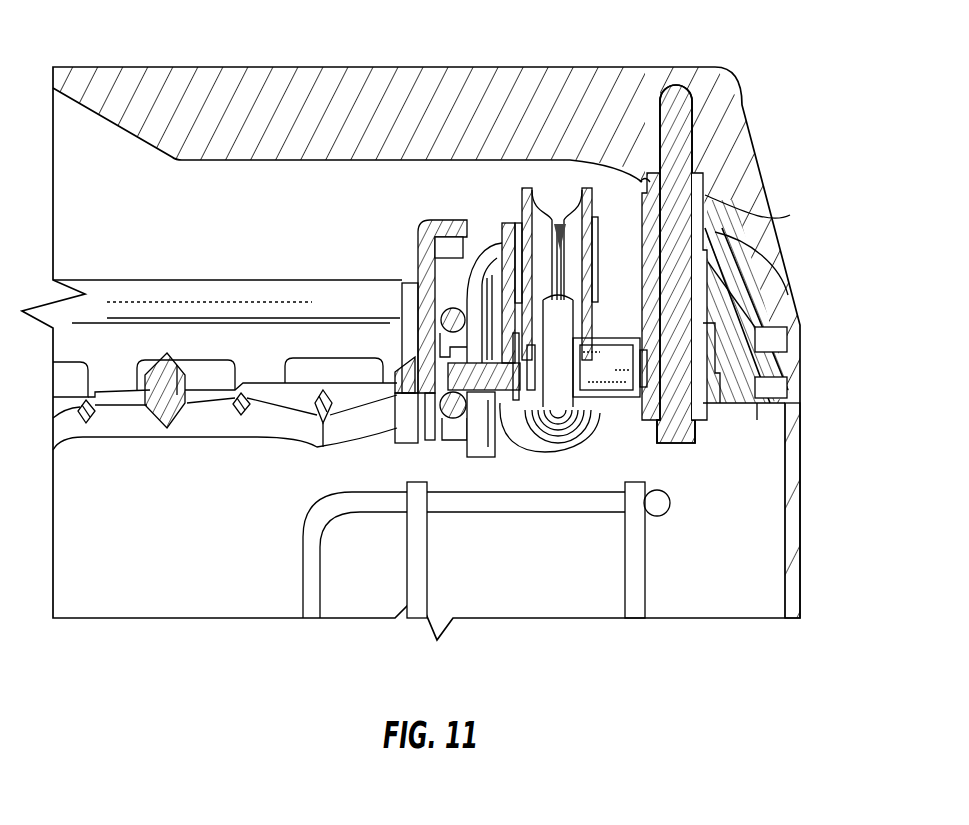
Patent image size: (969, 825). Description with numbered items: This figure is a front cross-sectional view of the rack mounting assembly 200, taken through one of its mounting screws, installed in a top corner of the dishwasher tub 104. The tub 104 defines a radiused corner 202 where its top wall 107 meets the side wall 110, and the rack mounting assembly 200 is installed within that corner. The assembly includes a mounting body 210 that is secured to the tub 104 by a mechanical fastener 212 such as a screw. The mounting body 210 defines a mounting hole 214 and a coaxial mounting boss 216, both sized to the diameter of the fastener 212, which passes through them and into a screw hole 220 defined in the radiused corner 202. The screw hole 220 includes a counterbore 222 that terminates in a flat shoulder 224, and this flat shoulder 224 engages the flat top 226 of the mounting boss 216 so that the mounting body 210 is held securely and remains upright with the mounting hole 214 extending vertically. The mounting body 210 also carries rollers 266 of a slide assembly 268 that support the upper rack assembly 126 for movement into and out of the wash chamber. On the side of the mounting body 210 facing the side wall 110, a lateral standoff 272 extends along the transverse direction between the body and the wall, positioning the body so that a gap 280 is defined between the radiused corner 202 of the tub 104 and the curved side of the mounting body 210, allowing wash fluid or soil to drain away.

The tub 104 is at (312, 115).
The top wall 107 is at (213, 165).
The side wall 110 is at (783, 578).
The upper rack assembly 126 is at (182, 325).
The rack mounting assembly 200 is at (768, 418).
The radiused corner 202 is at (762, 283).
The mounting body 210 is at (743, 405).
The mechanical fastener 212 is at (760, 327).
The mounting hole 214 is at (708, 270).
The mounting boss 216 is at (640, 185).
The screw hole 220 is at (677, 85).
The counterbore 222 is at (705, 200).
The flat shoulder 224 is at (645, 190).
The flat top 226 is at (700, 168).
The roller 266 is at (560, 392).
The slide assembly 268 is at (553, 221).
The lateral standoff 272 is at (787, 386).
The gap 280 is at (777, 327).